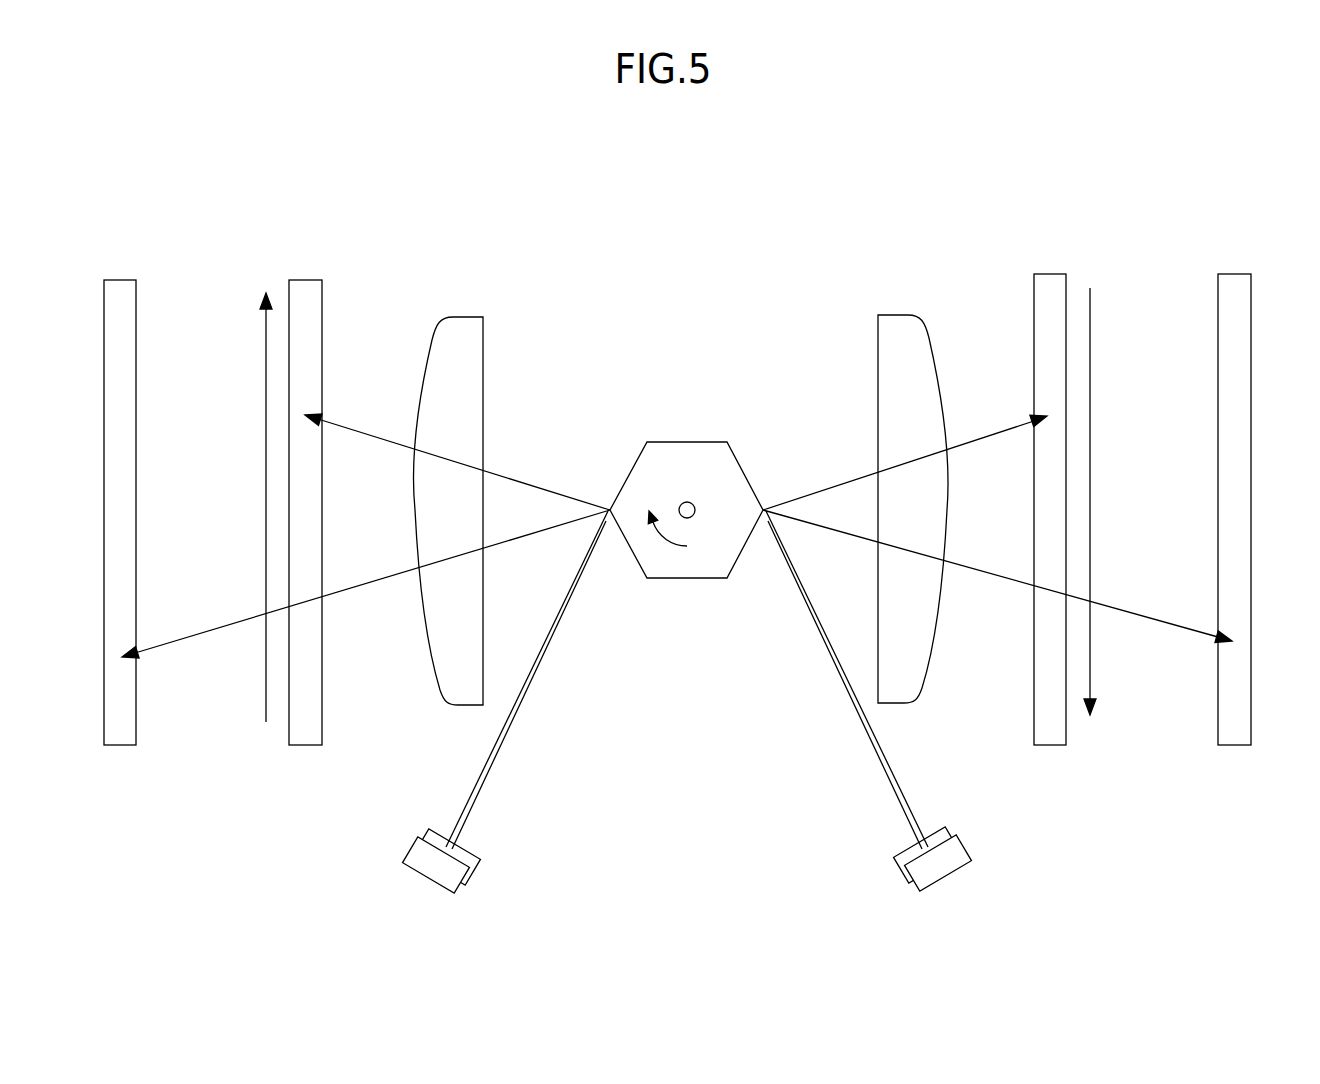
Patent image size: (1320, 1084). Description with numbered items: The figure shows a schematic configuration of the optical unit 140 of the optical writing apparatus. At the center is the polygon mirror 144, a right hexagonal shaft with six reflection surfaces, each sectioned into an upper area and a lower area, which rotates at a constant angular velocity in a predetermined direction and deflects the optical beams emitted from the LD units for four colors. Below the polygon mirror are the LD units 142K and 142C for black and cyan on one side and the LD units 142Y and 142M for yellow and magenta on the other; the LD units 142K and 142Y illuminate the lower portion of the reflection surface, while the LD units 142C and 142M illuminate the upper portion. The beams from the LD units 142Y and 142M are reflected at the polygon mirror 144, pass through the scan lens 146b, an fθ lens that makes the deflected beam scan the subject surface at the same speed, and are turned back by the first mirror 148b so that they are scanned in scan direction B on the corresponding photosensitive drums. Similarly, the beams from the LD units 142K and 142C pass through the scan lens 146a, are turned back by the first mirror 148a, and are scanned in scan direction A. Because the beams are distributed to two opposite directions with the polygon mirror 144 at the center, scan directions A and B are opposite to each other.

The optical unit 140 is at (1223, 180).
The LD unit 142C is at (420, 870).
The LD unit 142K is at (477, 877).
The LD unit 142Y is at (897, 875).
The LD unit 142M is at (955, 868).
The polygon mirror 144 is at (687, 578).
The scan lens 146a is at (471, 317).
The scan lens 146b is at (892, 315).
The first mirror 148a is at (320, 280).
The first mirror 148b is at (1036, 274).